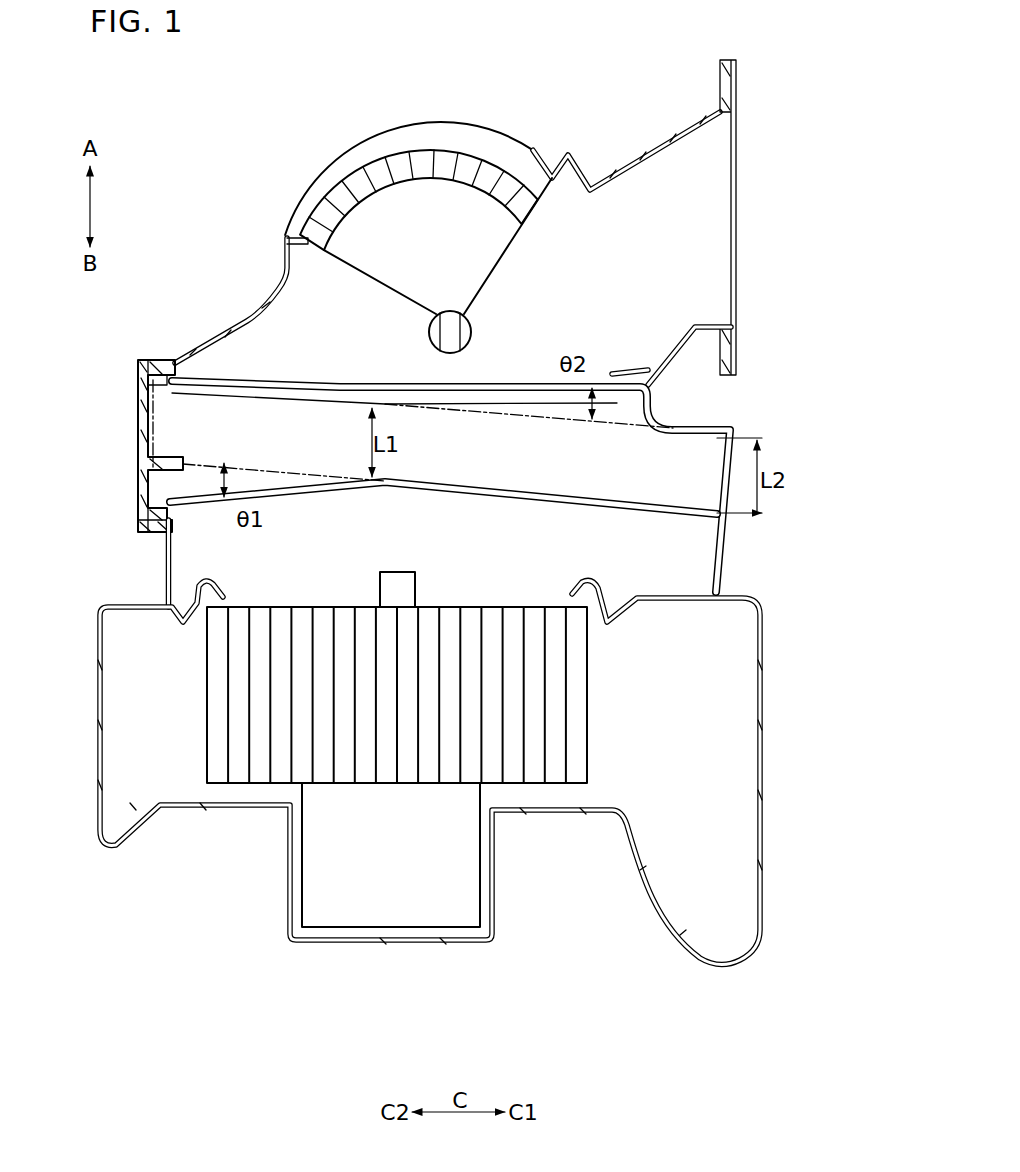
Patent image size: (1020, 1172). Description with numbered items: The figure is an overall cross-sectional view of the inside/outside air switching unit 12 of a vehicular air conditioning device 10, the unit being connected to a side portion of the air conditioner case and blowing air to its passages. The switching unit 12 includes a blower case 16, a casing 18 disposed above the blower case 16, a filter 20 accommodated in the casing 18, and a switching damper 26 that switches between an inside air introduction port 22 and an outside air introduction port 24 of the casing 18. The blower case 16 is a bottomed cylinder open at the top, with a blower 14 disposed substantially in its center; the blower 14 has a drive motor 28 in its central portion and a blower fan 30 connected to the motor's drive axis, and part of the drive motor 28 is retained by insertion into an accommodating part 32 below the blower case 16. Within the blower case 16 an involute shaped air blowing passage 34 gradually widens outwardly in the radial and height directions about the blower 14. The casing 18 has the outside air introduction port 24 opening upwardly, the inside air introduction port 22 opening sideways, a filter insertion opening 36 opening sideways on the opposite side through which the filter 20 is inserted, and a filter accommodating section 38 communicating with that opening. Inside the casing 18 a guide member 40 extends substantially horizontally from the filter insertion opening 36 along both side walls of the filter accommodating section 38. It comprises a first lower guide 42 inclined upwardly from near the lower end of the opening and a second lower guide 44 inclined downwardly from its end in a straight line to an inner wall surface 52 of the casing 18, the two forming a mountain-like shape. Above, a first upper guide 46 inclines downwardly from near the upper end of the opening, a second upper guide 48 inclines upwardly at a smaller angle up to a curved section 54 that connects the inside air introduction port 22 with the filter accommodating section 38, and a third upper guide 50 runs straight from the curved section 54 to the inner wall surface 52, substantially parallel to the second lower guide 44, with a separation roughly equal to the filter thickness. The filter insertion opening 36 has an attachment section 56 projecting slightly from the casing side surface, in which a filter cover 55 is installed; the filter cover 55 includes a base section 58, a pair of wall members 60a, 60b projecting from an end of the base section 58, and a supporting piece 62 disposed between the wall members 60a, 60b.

The vehicular air conditioning device 10 is at (271, 84).
The inside/outside air switching unit 12 is at (243, 302).
The blower 14 is at (598, 718).
The blower case 16 is at (96, 717).
The casing 18 is at (714, 422).
The filter 20 is at (445, 466).
The inside air introduction port 22 is at (710, 230).
The outside air introduction port 24 is at (417, 140).
The switching damper 26 is at (375, 265).
The drive motor 28 is at (330, 866).
The blower fan 30 is at (235, 727).
The accommodating part 32 is at (390, 940).
The air blowing passage 34 is at (720, 815).
The filter insertion opening 36 is at (150, 502).
The filter accommodating section 38 is at (521, 484).
The guide member 40 is at (506, 384).
The first lower guide 42 is at (228, 498).
The second lower guide 44 is at (606, 504).
The first upper guide 46 is at (250, 388).
The second upper guide 48 is at (382, 400).
The third upper guide 50 is at (692, 433).
The inner wall surface 52 is at (718, 492).
The curved section 54 is at (650, 406).
The filter cover 55 is at (127, 370).
The attachment section 56 is at (170, 366).
The base section 58 is at (147, 412).
The wall member 60a is at (160, 385).
The wall member 60b is at (172, 515).
The supporting piece 62 is at (160, 462).